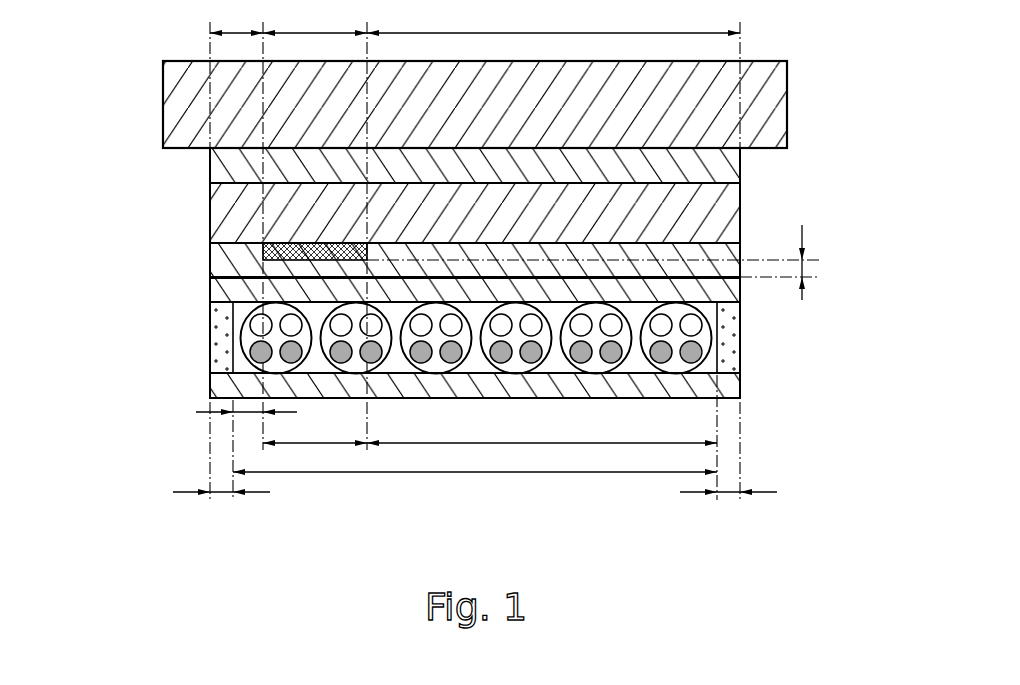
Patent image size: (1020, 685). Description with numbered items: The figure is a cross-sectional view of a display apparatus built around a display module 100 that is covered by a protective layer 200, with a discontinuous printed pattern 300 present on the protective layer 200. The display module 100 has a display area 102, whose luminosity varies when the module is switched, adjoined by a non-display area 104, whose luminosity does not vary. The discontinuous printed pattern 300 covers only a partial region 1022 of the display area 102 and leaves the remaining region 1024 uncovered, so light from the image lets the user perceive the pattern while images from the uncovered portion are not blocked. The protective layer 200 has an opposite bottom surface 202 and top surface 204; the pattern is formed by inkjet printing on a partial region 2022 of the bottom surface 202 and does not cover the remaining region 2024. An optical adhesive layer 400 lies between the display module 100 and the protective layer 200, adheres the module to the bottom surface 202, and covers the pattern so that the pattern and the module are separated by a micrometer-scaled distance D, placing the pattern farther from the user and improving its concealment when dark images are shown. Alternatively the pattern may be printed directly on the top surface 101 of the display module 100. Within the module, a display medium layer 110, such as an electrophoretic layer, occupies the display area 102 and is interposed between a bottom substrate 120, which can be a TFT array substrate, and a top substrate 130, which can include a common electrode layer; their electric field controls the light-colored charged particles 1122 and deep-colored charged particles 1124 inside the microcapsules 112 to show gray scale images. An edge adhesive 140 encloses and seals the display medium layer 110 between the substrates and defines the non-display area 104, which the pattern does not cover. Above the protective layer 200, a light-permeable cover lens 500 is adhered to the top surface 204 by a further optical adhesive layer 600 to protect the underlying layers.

The display module 100 is at (112, 248).
The top surface of the display module 101 is at (252, 277).
The display area 102 is at (475, 462).
The partial region of the display area 1022 is at (315, 432).
The remaining region of the display area 1024 is at (176, 449).
The non-display area 104 is at (222, 497).
The display medium layer 110 is at (218, 366).
The microcapsules 112 is at (677, 308).
The light-colored charged particles 1122 is at (690, 324).
The deep-colored charged particles 1124 is at (690, 352).
The bottom substrate 120 is at (222, 388).
The top substrate 130 is at (228, 287).
The edge adhesive 140 is at (233, 318).
The protective layer 200 is at (240, 202).
The bottom surface of the protective layer 202 is at (730, 200).
The partial region of the bottom surface 2022 is at (315, 18).
The remaining region of the bottom surface 2024 is at (470, 18).
The top surface of the protective layer 204 is at (730, 186).
The discontinuous printed pattern 300 is at (268, 245).
The optical adhesive layer 400 is at (730, 250).
The cover lens 500 is at (777, 100).
The optical adhesive layer 600 is at (730, 157).
The distance D is at (815, 262).